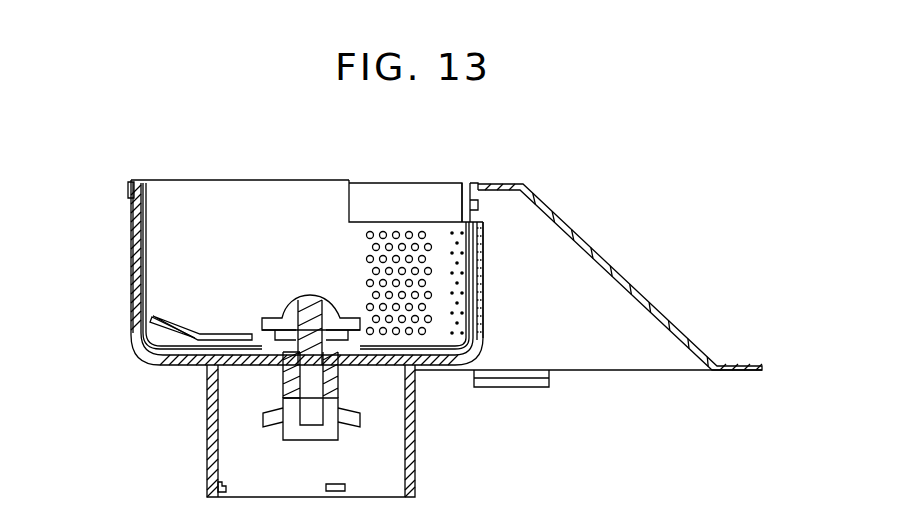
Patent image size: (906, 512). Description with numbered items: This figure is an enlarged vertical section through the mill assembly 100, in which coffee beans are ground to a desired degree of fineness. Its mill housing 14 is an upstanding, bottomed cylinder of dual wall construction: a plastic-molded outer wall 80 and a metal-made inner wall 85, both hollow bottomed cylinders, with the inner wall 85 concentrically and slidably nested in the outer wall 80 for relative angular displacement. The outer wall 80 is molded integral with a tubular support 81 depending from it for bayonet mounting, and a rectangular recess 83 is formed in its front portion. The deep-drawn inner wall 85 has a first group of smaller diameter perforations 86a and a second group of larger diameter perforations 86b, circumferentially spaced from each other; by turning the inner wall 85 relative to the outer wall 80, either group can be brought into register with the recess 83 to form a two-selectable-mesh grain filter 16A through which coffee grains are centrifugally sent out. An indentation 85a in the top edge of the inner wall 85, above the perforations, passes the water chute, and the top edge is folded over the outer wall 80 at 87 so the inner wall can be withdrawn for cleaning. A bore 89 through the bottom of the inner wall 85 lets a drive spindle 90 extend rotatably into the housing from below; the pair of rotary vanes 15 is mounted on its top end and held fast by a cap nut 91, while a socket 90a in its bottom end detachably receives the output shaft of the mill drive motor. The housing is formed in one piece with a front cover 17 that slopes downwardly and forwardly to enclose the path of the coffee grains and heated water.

The mill assembly 100 is at (210, 171).
The clip 87 is at (127, 188).
The outer wall 80 is at (131, 255).
The inner wall 85 is at (146, 268).
The mill housing 14 is at (129, 313).
The rotary vanes 15 is at (214, 338).
The cap nut 91 is at (296, 300).
The second group of larger diameter perforations 86b is at (356, 266).
The indentation 85a is at (382, 222).
The first group of smaller diameter perforations 86a is at (452, 245).
The rectangular recess 83 is at (478, 208).
The front cover 17 is at (607, 258).
The grain filter 16A is at (489, 293).
The bore 89 is at (298, 372).
The drive spindle 90 is at (327, 380).
The tubular support 81 is at (207, 428).
The socket 90a is at (330, 412).